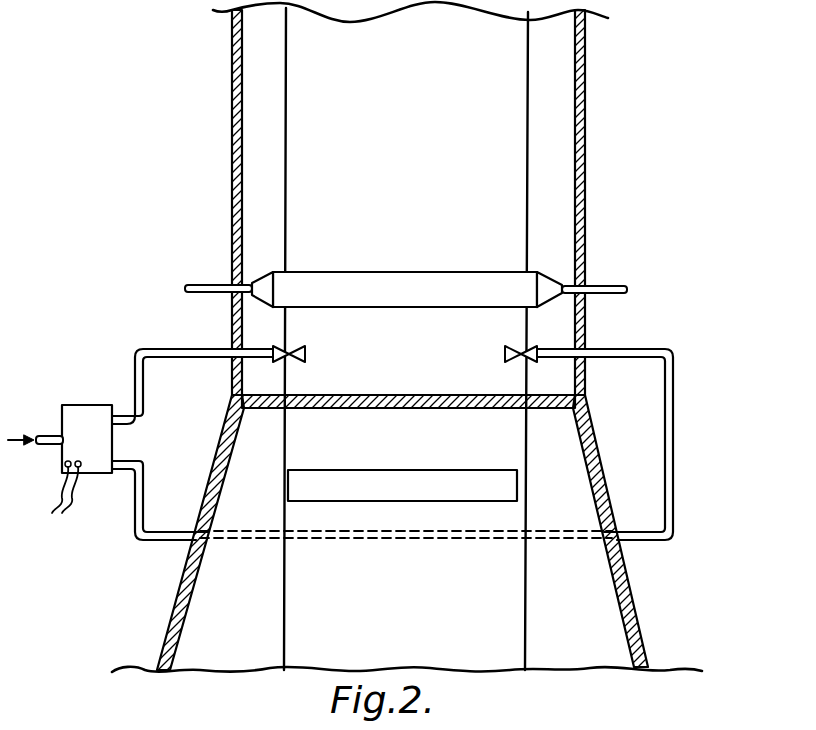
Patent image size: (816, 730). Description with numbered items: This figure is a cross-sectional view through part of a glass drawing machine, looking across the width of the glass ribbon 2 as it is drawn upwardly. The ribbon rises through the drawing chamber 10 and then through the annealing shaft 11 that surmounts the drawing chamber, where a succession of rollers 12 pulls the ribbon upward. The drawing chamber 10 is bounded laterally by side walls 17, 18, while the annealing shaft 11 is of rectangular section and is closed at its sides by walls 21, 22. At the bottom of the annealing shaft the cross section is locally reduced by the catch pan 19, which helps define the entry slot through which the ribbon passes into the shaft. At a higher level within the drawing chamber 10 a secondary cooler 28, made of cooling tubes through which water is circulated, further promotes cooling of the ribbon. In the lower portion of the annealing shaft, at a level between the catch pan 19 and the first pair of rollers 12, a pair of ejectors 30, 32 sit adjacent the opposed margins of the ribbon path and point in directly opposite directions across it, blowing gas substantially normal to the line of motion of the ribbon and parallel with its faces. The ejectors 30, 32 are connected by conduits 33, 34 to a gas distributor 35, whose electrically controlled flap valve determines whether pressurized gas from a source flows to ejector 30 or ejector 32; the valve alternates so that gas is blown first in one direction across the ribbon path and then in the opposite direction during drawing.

The glass ribbon 2 is at (413, 173).
The drawing chamber 10 is at (572, 495).
The annealing shaft 11 is at (563, 72).
The rollers 12 is at (413, 300).
The side wall 17 is at (173, 600).
The side wall 18 is at (625, 600).
The catch pan 19 is at (380, 398).
The wall 21 is at (232, 150).
The wall 22 is at (585, 155).
The secondary cooler 28 is at (408, 495).
The ejector 30 is at (504, 350).
The ejector 32 is at (306, 349).
The conduit 33 is at (675, 436).
The conduit 34 is at (168, 348).
The gas distributor 35 is at (73, 394).